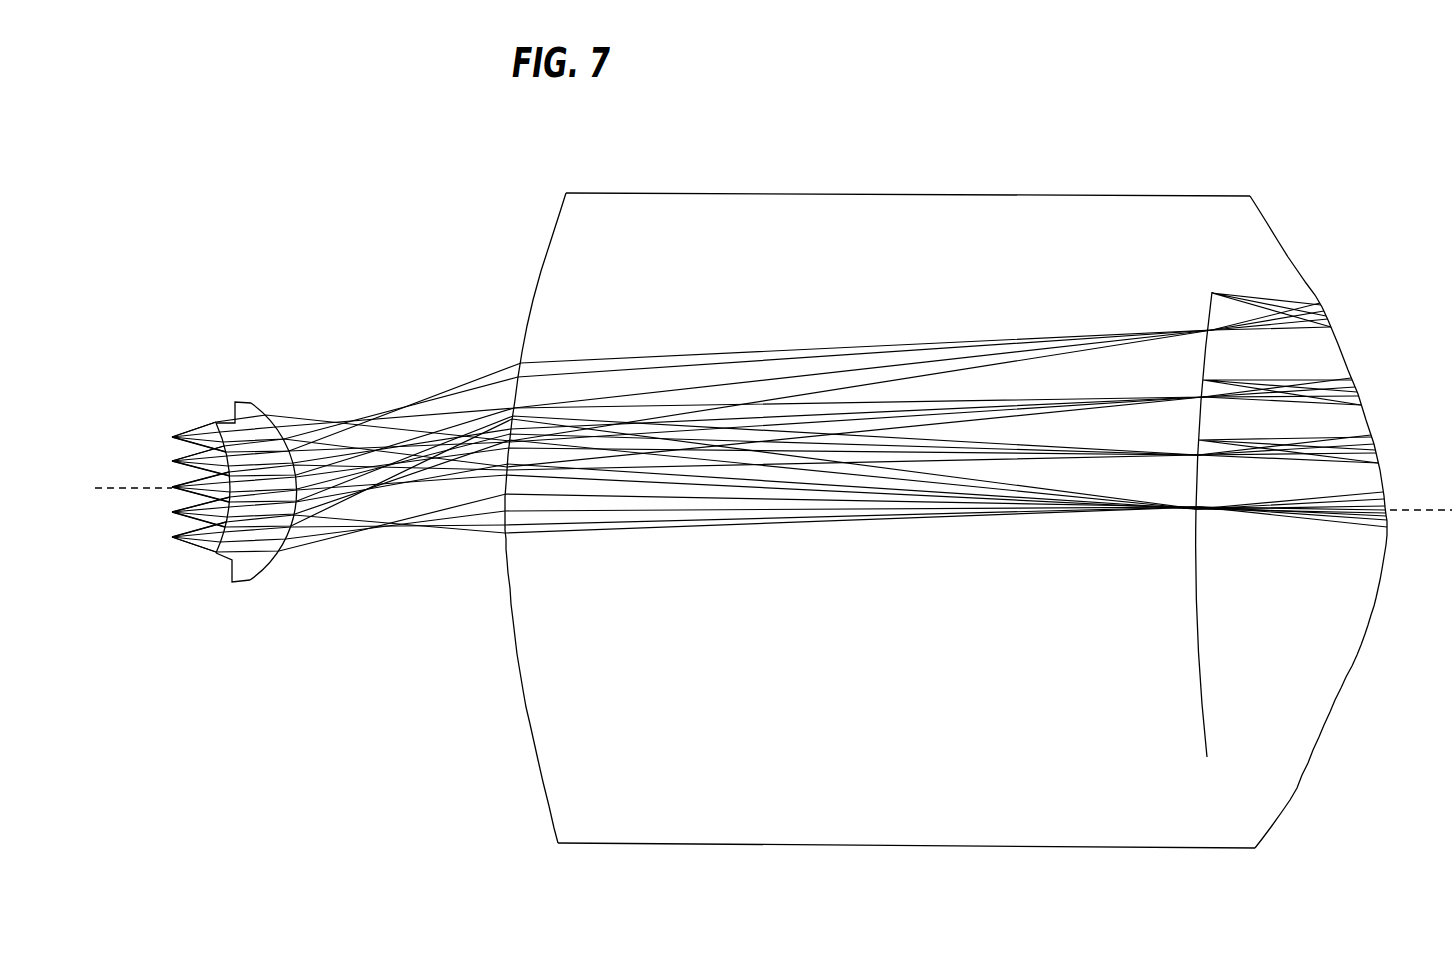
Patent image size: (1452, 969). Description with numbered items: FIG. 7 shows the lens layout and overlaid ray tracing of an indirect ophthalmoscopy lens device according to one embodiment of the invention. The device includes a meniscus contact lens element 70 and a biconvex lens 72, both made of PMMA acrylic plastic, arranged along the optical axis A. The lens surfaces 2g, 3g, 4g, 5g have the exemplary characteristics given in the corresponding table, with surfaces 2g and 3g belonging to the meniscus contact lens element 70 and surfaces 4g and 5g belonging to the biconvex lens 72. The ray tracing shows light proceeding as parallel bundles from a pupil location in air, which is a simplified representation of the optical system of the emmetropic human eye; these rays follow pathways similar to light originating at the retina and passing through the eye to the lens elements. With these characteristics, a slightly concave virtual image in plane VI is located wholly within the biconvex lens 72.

The surface 2g is at (215, 553).
The surface 3g is at (275, 566).
The meniscus contact lens element 70 is at (243, 567).
The surface 4g is at (522, 690).
The surface 5g is at (1308, 800).
The biconvex lens 72 is at (838, 828).
The virtual image plane VI is at (1205, 680).
The optical axis A is at (1437, 510).